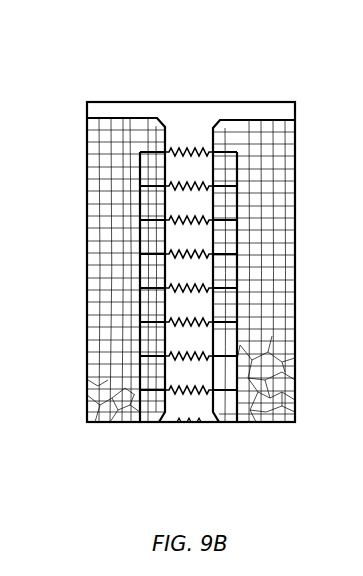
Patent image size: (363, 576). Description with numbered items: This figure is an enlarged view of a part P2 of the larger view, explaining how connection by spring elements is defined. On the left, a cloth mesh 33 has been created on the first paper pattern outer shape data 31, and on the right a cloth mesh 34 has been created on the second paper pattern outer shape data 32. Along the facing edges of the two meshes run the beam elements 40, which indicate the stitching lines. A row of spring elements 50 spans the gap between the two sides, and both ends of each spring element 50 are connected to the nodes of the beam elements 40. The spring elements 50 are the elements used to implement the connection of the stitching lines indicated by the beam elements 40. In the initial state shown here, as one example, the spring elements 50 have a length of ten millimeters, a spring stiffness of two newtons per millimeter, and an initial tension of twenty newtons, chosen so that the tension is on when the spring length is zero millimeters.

The first paper pattern outer shape data 31 is at (145, 118).
The second paper pattern outer shape data 32 is at (285, 114).
The cloth mesh 33 is at (110, 255).
The cloth mesh 34 is at (270, 204).
The beam elements 40 is at (135, 168).
The spring elements 50 is at (182, 150).
The part P2 is at (225, 101).